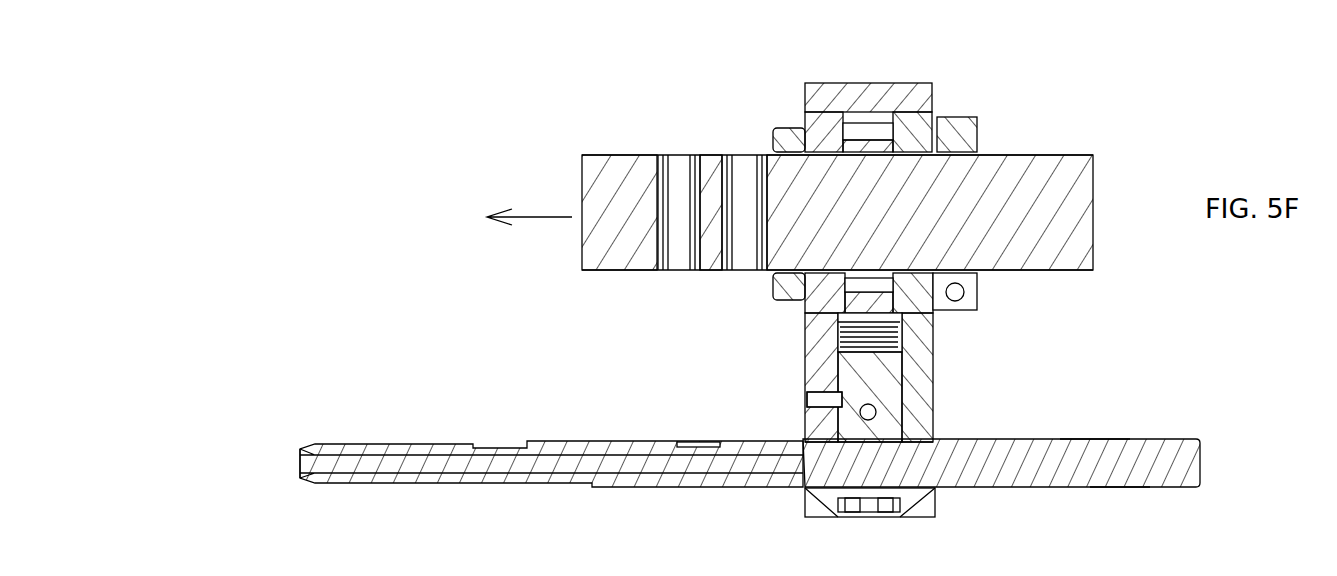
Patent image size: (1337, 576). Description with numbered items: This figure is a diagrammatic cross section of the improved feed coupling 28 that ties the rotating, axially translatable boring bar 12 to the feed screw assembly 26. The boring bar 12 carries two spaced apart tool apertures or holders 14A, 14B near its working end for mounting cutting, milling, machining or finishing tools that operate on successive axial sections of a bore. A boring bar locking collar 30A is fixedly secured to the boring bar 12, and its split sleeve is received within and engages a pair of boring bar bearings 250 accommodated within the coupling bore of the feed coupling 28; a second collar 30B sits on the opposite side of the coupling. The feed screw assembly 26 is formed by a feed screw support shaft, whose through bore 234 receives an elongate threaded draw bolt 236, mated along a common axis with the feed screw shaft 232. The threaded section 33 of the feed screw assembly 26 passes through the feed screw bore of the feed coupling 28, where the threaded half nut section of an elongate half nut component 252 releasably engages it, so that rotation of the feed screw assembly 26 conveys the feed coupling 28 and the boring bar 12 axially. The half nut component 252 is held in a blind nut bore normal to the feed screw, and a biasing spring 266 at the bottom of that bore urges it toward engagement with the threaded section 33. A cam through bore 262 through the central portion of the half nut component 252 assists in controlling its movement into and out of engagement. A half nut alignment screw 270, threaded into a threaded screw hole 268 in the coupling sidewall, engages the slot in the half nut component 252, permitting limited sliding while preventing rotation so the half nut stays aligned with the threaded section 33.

The boring bar 12 is at (837, 211).
The tool aperture or holder 14A is at (676, 255).
The tool aperture or holder 14B is at (742, 255).
The feed coupling 28 is at (901, 89).
The boring bar locking collar 30A is at (975, 120).
The second bearing 30B is at (790, 128).
The boring bar bearings 250 is at (830, 115).
The elongate half nut component 252 is at (897, 357).
The biasing spring 266 is at (905, 352).
The cam through bore 262 is at (900, 418).
The half nut alignment screw 270 is at (805, 400).
The threaded screw hole 268 is at (805, 403).
The feed screw assembly 26 is at (1022, 470).
The threaded section 33 is at (1095, 445).
The feed screw shaft 232 is at (1120, 480).
The through bore 234 is at (503, 420).
The elongate threaded draw bolt 236 is at (300, 468).